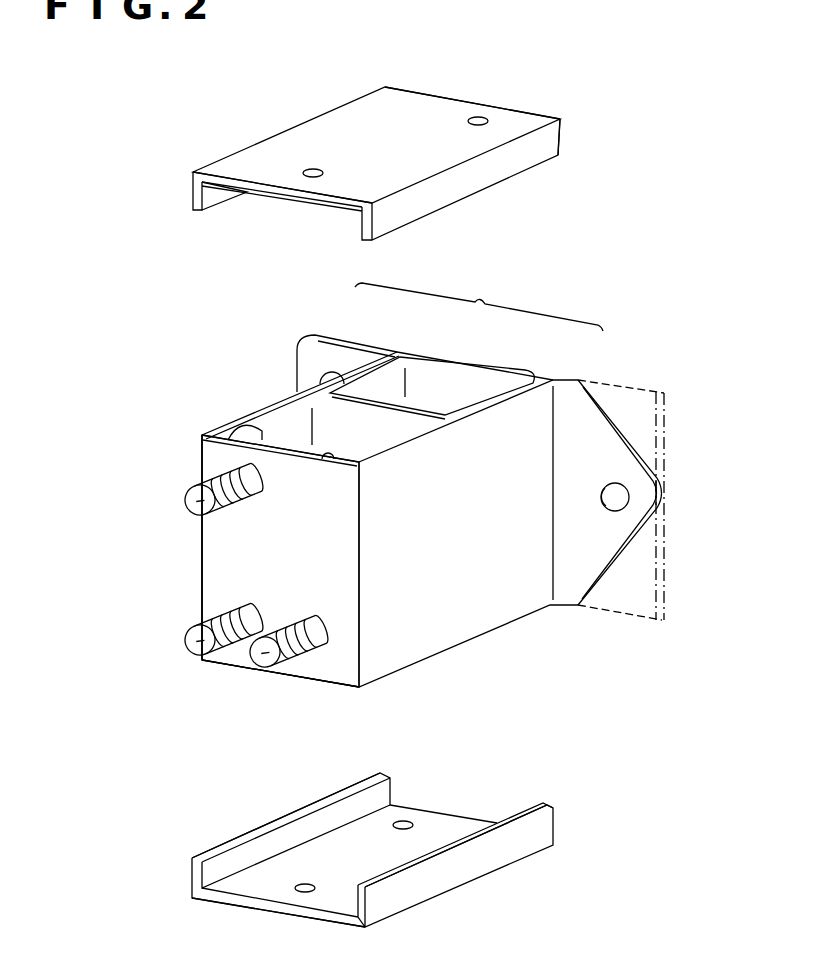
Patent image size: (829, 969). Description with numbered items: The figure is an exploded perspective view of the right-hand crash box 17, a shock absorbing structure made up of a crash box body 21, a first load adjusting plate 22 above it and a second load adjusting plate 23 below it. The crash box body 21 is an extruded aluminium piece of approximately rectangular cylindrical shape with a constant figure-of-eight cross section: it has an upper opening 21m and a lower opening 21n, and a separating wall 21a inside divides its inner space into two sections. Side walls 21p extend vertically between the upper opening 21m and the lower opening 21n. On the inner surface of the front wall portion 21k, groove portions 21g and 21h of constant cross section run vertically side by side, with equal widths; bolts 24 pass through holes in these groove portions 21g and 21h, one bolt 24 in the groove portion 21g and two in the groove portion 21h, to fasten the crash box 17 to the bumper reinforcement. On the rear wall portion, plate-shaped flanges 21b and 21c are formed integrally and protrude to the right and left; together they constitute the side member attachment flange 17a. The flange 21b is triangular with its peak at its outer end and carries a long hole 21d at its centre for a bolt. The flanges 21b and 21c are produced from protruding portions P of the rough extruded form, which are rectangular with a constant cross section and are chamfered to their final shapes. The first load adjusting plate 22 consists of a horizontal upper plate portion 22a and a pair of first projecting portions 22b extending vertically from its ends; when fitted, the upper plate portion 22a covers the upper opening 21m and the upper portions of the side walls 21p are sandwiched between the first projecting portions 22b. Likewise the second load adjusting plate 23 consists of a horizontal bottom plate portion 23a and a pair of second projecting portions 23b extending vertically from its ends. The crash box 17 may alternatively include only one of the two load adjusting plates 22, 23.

The crash box 17 is at (682, 160).
The side member attachment flange 17a is at (479, 301).
The crash box body 21 is at (552, 670).
The separating wall 21a is at (407, 425).
The flange 21b is at (567, 385).
The flange 21c is at (362, 348).
The long hole 21d is at (630, 500).
The groove portion 21g is at (329, 462).
The groove portion 21h is at (238, 428).
The front wall portion 21k is at (223, 585).
The upper opening 21m is at (296, 412).
The lower opening 21n is at (381, 688).
The side wall 21p is at (268, 402).
The first load adjusting plate 22 is at (440, 105).
The upper plate portion 22a is at (305, 135).
The first projecting portion 22b is at (195, 192).
The second load adjusting plate 23 is at (510, 848).
The bottom plate portion 23a is at (275, 887).
The second projecting portion 23b is at (242, 852).
The bolt 24 is at (192, 503).
The protruding portion P is at (665, 417).